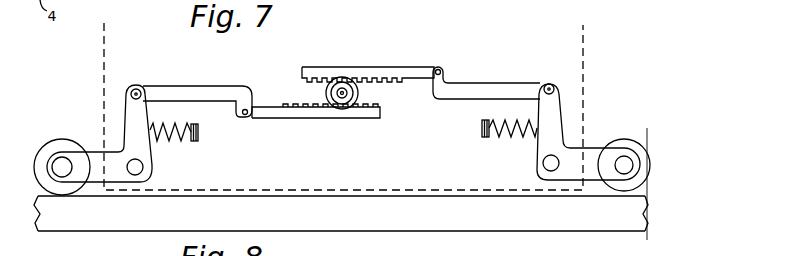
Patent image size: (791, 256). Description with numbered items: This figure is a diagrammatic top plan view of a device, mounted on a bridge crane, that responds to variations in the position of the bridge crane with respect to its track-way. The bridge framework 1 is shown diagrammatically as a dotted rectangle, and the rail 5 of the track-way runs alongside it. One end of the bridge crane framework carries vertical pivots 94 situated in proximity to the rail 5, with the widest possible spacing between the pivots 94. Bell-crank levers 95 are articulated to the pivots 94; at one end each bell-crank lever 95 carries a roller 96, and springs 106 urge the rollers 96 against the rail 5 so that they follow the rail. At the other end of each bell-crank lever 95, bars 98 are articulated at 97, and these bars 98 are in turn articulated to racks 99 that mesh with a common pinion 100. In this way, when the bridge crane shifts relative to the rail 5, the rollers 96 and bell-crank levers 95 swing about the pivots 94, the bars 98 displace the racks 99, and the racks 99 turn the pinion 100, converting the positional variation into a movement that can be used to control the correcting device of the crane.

The bridge framework 1 is at (215, 190).
The rail 5 is at (411, 223).
The vertical pivots 94 is at (144, 168).
The bell-crank levers 95 is at (96, 151).
The rollers 96 is at (53, 143).
The articulation 97 is at (137, 88).
The bars 98 is at (190, 98).
The racks 99 is at (367, 72).
The pinion 100 is at (353, 103).
The springs 106 is at (186, 142).